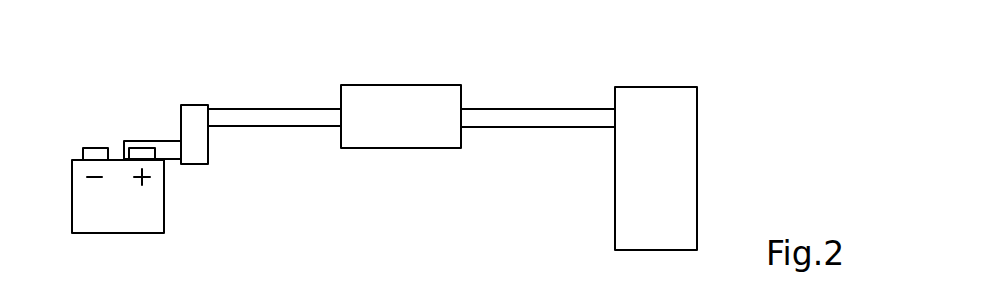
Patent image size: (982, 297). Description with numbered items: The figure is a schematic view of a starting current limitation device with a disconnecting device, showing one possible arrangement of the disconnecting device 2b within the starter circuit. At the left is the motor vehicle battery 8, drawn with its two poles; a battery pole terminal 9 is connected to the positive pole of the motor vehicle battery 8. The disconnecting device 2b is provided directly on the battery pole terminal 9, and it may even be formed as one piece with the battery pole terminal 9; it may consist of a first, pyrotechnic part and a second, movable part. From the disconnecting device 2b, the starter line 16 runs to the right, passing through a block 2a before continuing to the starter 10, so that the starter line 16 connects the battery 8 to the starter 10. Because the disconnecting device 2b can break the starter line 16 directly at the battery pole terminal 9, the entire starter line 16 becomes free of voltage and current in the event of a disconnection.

The motor vehicle battery 8 is at (72, 207).
The battery pole terminal 9 is at (135, 140).
The disconnecting device 2b is at (192, 103).
The starter line 16 is at (282, 107).
The control unit 2a is at (430, 83).
The starter 10 is at (672, 85).